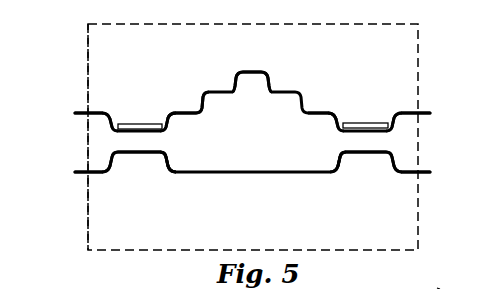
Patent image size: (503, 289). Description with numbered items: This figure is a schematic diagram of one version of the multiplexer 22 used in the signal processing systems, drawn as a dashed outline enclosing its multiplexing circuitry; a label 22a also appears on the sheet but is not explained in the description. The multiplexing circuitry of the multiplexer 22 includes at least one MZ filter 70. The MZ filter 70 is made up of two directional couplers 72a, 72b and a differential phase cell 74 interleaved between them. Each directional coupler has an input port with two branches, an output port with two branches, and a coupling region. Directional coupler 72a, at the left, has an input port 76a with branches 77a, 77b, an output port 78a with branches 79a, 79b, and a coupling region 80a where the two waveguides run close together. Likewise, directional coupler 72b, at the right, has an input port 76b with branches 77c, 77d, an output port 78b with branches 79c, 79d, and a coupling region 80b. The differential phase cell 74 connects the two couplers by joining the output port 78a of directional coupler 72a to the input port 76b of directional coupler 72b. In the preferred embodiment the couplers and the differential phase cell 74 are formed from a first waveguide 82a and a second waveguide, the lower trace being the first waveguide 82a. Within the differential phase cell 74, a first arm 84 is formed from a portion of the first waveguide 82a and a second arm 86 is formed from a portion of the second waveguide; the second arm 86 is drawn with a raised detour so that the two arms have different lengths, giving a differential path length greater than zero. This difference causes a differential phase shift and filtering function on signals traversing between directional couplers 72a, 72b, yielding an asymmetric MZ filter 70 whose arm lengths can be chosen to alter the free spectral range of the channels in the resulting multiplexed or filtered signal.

The multiplexer 22 is at (421, 57).
The panel portion 22a is at (437, 288).
The MZ filter 70 is at (88, 62).
The differential phase cell 74 is at (294, 85).
The second arm 86 is at (222, 92).
The output port 78a is at (202, 91).
The output port 78b is at (382, 114).
The input port 76a is at (113, 112).
The input port 76b is at (163, 114).
The coupling region 80a is at (138, 123).
The coupling region 80b is at (367, 122).
The branch 77a is at (97, 112).
The branch 79c is at (412, 110).
The branch 79a is at (168, 127).
The branch 77c is at (336, 126).
The first arm 84 is at (220, 173).
The directional coupler 72a is at (132, 174).
The directional coupler 72b is at (362, 168).
The first waveguide 82a is at (173, 177).
The branch 77b is at (93, 177).
The branch 79b is at (168, 153).
The branch 77d is at (337, 153).
The branch 79d is at (410, 176).